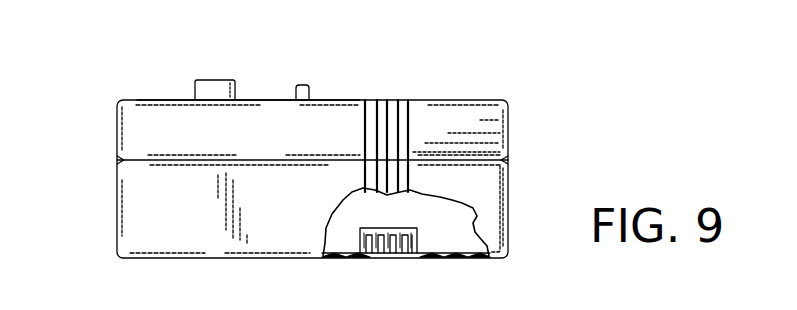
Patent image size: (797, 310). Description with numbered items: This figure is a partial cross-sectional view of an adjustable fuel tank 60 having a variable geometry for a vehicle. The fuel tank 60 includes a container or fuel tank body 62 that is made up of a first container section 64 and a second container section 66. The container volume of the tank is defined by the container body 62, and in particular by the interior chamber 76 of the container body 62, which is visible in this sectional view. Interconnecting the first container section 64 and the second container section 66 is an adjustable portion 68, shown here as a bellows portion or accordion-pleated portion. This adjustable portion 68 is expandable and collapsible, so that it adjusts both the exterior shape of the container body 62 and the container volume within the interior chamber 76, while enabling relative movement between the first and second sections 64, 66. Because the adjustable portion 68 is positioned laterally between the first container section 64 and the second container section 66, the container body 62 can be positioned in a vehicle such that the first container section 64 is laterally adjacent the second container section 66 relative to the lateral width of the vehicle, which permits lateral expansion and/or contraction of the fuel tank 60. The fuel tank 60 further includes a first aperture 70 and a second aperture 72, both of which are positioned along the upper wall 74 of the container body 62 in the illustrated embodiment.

The adjustable fuel tank 60 is at (110, 76).
The container body 62 is at (210, 248).
The first container section 64 is at (146, 194).
The second container section 66 is at (496, 221).
The adjustable portion 68 is at (393, 108).
The first aperture 70 is at (213, 88).
The second aperture 72 is at (305, 85).
The upper wall 74 is at (265, 98).
The interior chamber 76 is at (458, 214).